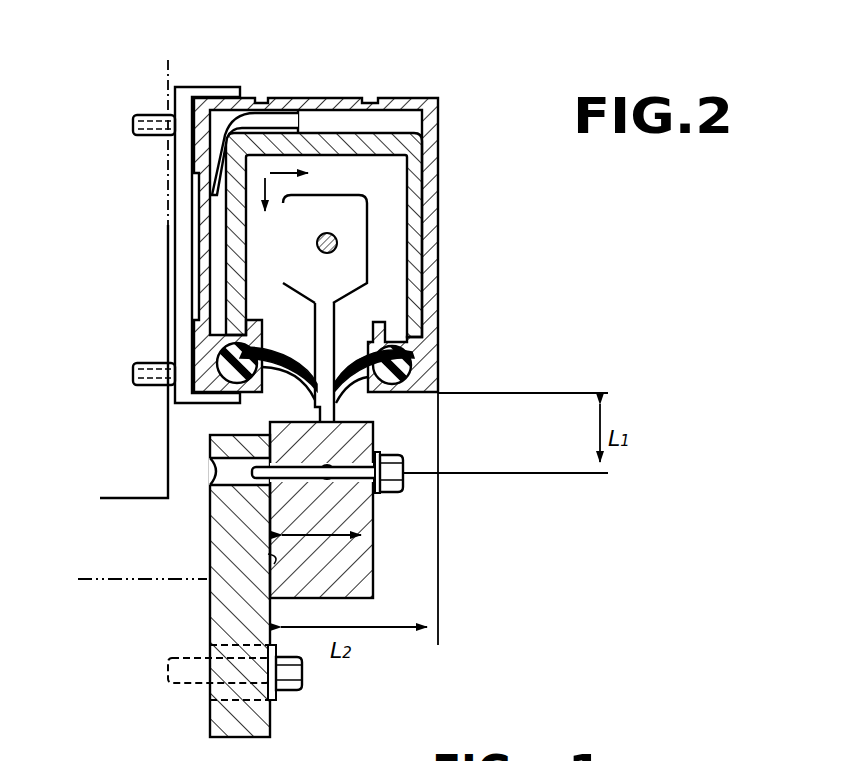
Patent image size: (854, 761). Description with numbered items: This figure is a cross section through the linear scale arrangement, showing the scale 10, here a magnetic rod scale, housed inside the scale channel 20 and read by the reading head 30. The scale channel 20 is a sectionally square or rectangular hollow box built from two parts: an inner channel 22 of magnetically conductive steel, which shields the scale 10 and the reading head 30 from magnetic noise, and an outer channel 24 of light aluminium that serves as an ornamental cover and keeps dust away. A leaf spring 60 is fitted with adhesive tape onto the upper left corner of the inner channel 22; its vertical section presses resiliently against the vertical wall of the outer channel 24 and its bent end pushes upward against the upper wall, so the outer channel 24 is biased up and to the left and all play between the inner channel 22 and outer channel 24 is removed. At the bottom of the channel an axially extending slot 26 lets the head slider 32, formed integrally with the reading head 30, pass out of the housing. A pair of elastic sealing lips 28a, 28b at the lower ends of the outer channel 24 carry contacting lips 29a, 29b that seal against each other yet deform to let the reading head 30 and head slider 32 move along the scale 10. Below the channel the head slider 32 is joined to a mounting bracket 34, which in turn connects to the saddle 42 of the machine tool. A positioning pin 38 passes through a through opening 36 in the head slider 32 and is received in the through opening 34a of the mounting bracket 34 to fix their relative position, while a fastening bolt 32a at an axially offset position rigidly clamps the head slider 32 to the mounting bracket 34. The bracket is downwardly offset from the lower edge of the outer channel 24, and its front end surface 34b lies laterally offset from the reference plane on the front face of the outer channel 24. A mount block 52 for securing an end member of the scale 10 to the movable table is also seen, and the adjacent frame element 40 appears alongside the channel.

The scale 10 is at (327, 233).
The scale channel 20 is at (446, 110).
The inner channel 22 is at (380, 140).
The outer channel 24 is at (320, 105).
The slot 26 is at (276, 392).
The sealing lip 28a is at (228, 362).
The sealing lip 28b is at (413, 362).
The contacting lip 29a is at (300, 362).
The contacting lip 29b is at (352, 382).
The reading head 30 is at (380, 196).
The head slider 32 is at (328, 323).
The fastening bolt 32a is at (404, 477).
The mounting bracket 34 is at (210, 612).
The through opening 34a is at (220, 466).
The front end surface 34b is at (268, 554).
The through opening 36 is at (372, 517).
The positioning pin 38 is at (333, 478).
The frame 40 is at (168, 234).
The saddle 42 is at (210, 742).
The mount block 52 is at (185, 90).
The leaf spring 60 is at (285, 120).